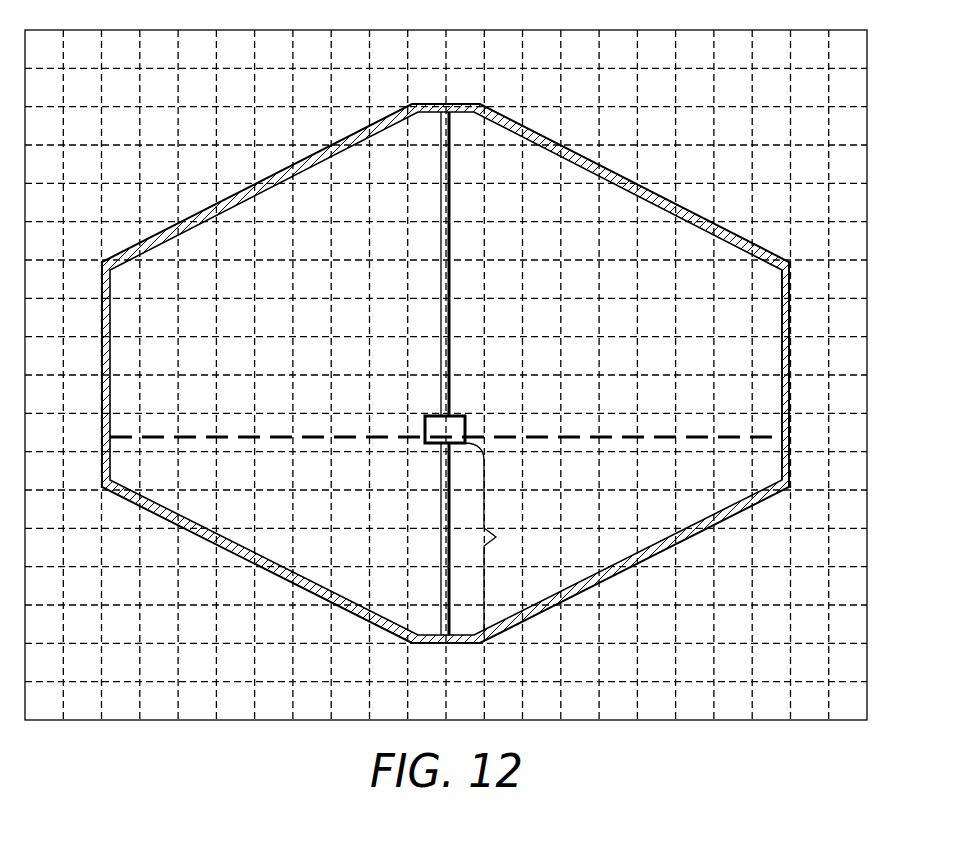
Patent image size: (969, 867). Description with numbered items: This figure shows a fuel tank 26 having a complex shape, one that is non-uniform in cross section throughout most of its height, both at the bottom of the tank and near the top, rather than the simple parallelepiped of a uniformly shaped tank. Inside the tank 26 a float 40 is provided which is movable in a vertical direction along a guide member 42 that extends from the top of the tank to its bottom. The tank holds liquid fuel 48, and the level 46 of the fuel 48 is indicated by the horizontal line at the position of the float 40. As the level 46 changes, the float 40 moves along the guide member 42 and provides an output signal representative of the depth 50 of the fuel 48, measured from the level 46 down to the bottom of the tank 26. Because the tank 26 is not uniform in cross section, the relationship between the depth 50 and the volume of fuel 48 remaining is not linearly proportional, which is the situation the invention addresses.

The fuel tank 26 is at (790, 362).
The float 40 is at (465, 425).
The guide member 42 is at (450, 322).
The level 46 is at (655, 437).
The fuel 48 is at (768, 475).
The depth 50 is at (497, 539).